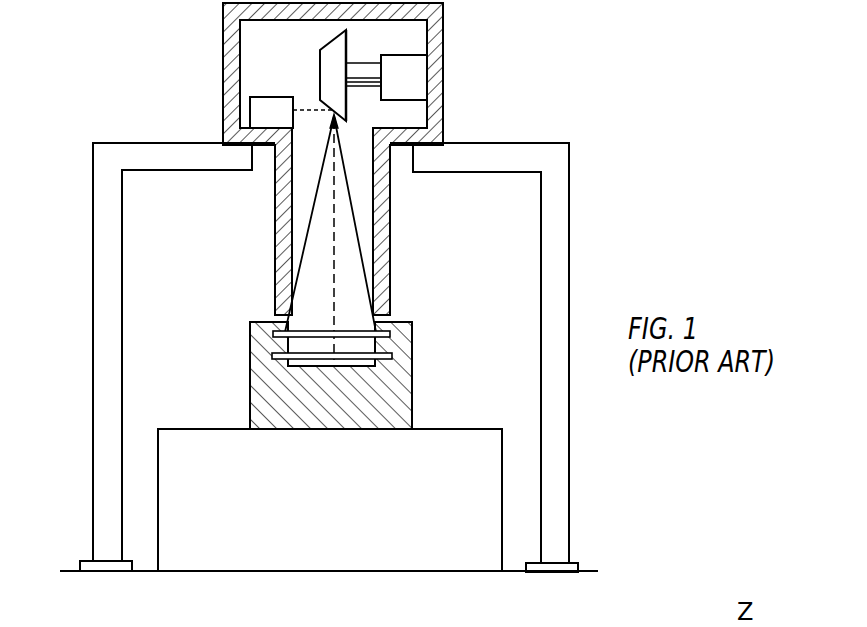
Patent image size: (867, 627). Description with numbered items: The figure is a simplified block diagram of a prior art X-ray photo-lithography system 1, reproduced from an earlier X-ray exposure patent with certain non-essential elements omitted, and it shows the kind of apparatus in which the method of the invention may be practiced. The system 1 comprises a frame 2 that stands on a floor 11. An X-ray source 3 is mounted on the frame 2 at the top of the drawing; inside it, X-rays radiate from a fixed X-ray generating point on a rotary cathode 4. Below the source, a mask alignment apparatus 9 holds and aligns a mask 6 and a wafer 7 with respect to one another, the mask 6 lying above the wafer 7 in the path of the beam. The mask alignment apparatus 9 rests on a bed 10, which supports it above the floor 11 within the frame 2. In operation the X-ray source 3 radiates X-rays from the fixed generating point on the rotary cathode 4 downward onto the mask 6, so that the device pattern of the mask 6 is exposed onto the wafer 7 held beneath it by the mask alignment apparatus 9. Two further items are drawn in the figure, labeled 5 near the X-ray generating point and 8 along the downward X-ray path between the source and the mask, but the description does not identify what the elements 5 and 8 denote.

The system 1 is at (417, 290).
The frame 2 is at (558, 220).
The X-ray source 3 is at (315, 80).
The rotary cathode 4 is at (342, 52).
The focal spot 5 is at (337, 112).
The mask 6 is at (365, 333).
The wafer 7 is at (364, 350).
The X-ray beam 8 is at (332, 248).
The mask alignment apparatus 9 is at (405, 393).
The bed 10 is at (502, 455).
The floor 11 is at (582, 578).